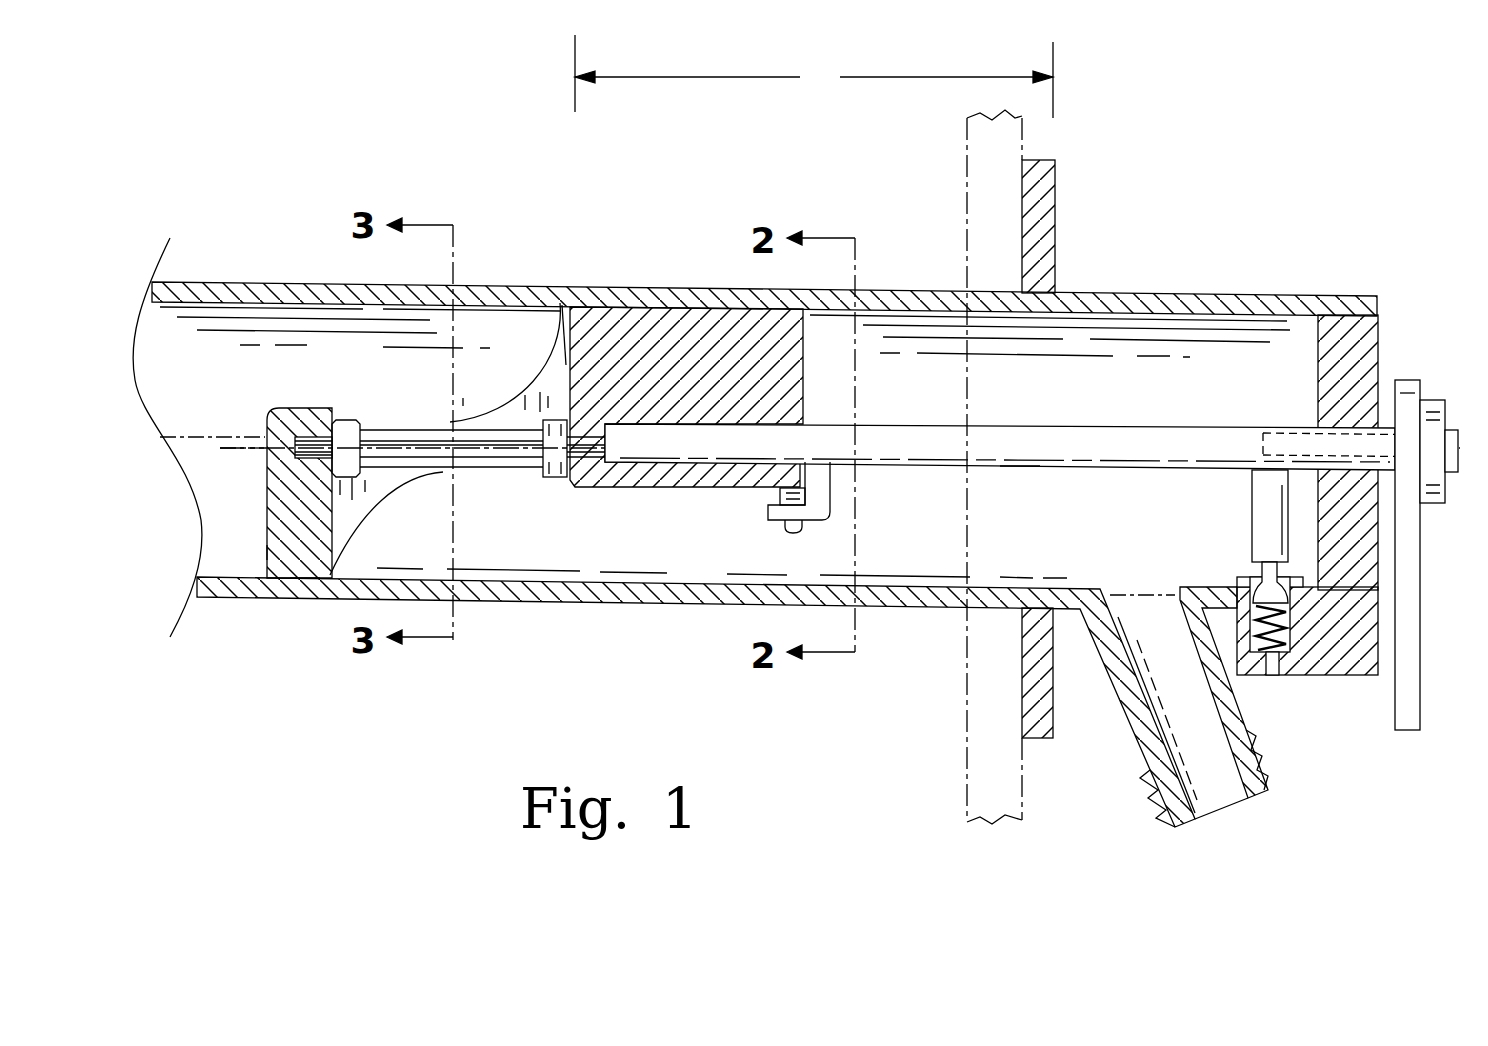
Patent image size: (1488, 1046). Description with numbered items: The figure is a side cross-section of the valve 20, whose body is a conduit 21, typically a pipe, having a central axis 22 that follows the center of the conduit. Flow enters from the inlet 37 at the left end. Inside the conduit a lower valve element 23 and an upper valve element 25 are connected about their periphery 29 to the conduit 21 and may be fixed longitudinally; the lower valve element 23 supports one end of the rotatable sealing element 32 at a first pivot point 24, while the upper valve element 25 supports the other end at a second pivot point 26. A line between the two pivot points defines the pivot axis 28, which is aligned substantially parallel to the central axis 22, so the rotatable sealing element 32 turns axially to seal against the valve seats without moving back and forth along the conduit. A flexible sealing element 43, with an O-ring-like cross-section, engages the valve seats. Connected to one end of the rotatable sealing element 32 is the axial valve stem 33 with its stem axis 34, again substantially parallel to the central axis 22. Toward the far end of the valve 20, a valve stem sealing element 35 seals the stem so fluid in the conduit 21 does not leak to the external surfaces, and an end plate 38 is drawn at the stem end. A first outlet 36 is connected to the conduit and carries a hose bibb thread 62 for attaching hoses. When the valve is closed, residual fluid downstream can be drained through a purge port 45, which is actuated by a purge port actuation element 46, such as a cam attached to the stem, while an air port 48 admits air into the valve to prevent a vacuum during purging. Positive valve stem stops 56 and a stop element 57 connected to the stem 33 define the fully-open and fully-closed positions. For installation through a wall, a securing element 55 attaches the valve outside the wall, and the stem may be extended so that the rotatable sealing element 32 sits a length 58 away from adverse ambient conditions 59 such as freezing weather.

The valve 20 is at (287, 190).
The conduit 21 is at (223, 282).
The central axis 22 is at (208, 437).
The lower valve element 23 is at (260, 550).
The first pivot point 24 is at (308, 430).
The upper valve element 25 is at (543, 365).
The second pivot point 26 is at (588, 482).
The pivot axis 28 is at (252, 452).
The periphery 29 is at (297, 576).
The rotatable sealing element 32 is at (492, 474).
The axial valve stem 33 is at (1022, 480).
The stem axis 34 is at (937, 447).
The valve stem sealing element 35 is at (1360, 343).
The first outlet 36 is at (1240, 713).
The inlet 37 is at (175, 462).
The end plate 38 is at (1423, 610).
The flexible sealing element 43 is at (393, 440).
The purge port 45 is at (1313, 652).
The purge port actuation element 46 is at (1258, 517).
The air port 48 is at (1465, 457).
The securing element 55 is at (1057, 695).
The positive valve stem stops 56 is at (783, 530).
The stop element 57 is at (838, 490).
The length 58 is at (814, 76).
The adverse ambient conditions 59 is at (1228, 175).
The hose bibb thread 62 is at (1147, 808).